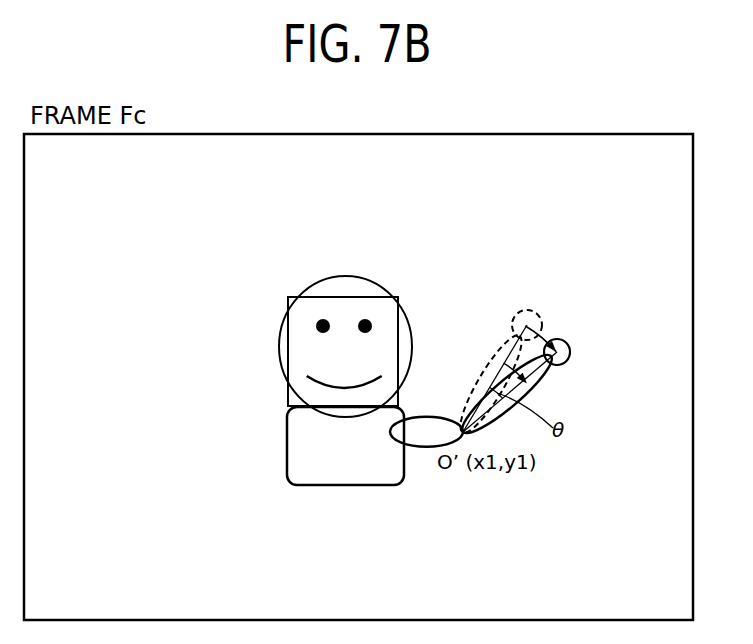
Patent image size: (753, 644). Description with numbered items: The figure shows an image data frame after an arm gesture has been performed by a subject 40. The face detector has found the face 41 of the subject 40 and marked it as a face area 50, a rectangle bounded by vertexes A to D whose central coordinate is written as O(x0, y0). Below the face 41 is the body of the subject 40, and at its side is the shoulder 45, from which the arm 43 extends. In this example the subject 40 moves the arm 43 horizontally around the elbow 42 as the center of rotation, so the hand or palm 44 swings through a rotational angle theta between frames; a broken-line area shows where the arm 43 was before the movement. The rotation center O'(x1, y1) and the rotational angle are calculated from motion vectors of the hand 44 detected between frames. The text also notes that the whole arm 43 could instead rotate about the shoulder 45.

The subject 40 is at (308, 447).
The face 41 is at (342, 288).
The elbow 42 is at (458, 428).
The arm 43 is at (527, 395).
The hand 44 is at (564, 342).
The shoulder 45 is at (400, 432).
The face area 50 is at (290, 395).